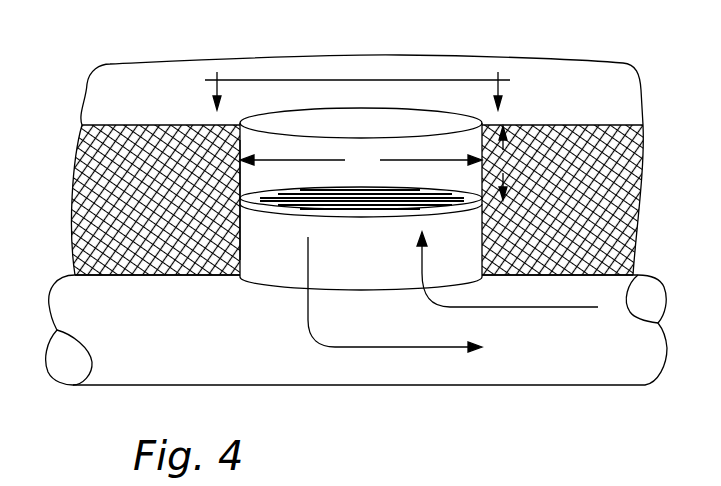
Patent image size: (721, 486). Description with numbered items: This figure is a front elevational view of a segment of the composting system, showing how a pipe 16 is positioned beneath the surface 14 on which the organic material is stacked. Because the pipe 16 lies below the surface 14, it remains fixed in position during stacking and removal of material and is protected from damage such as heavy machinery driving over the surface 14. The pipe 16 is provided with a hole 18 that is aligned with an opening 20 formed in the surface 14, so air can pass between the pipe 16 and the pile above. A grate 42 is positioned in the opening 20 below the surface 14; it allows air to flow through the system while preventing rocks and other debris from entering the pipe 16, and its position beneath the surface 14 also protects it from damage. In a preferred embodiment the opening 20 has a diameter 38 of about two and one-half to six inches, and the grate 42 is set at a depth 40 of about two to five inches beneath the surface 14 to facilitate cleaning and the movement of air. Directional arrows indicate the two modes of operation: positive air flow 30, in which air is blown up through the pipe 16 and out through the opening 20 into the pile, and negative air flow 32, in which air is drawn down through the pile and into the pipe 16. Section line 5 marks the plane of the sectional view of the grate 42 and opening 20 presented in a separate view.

The surface 14 is at (562, 82).
The pipe 16 is at (517, 375).
The hole 18 is at (376, 289).
The opening 20 is at (325, 131).
The positive air flow arrow 30 is at (418, 268).
The negative air flow arrow 32 is at (306, 270).
The diameter 38 is at (361, 161).
The depth 40 is at (504, 163).
The grate 42 is at (470, 204).
The section line 5- 5 is at (356, 90).